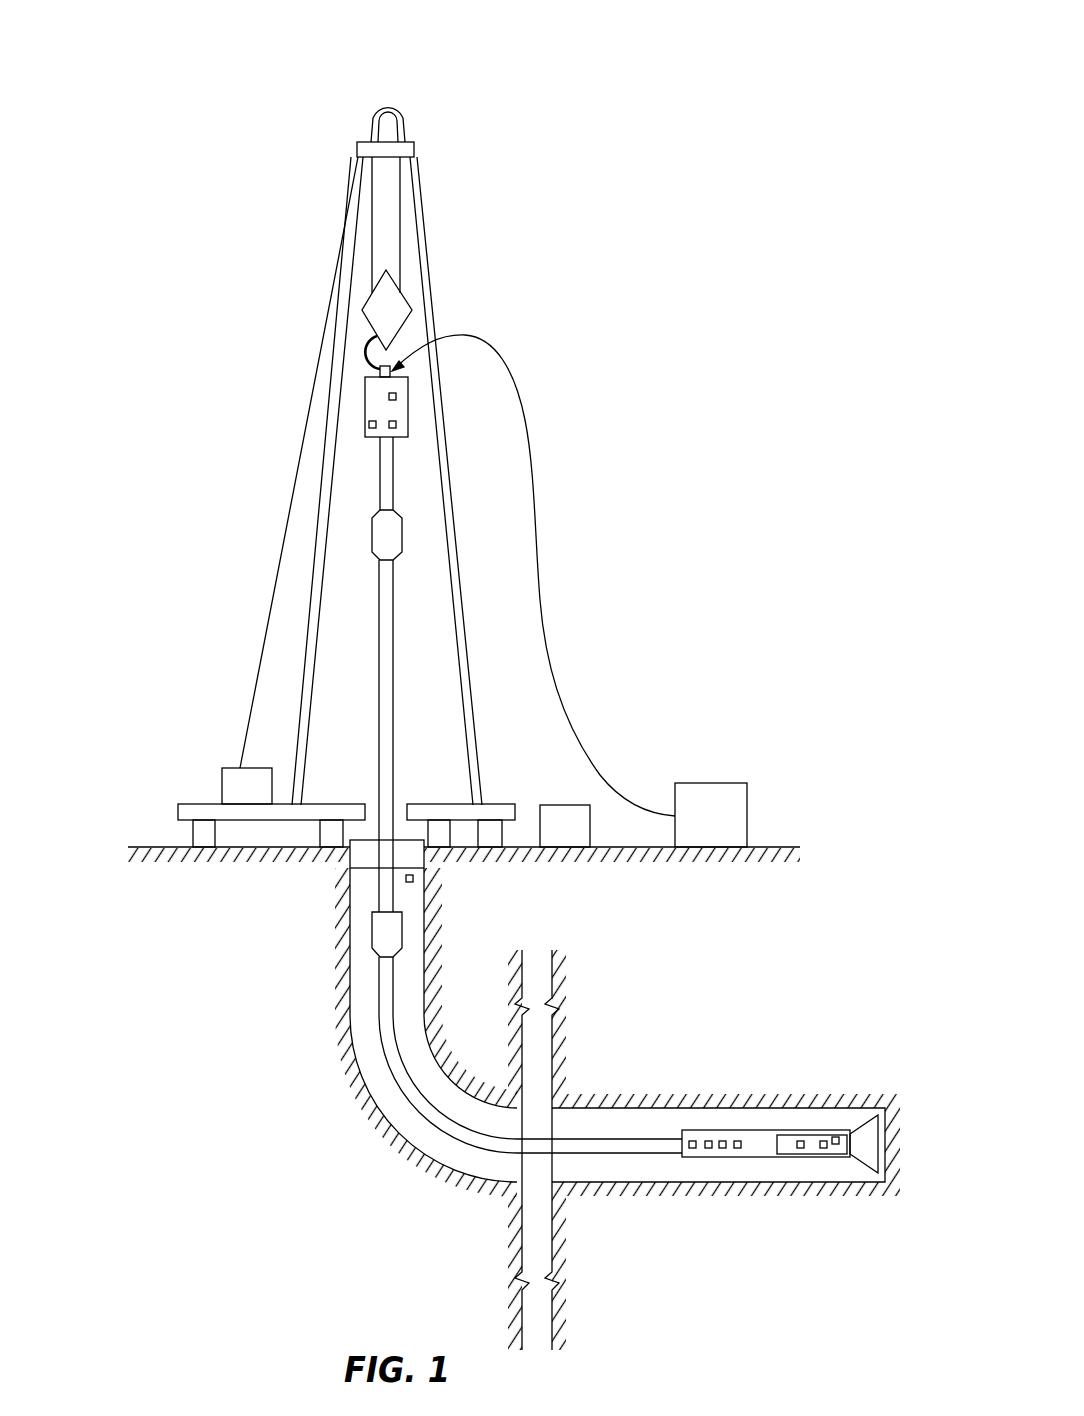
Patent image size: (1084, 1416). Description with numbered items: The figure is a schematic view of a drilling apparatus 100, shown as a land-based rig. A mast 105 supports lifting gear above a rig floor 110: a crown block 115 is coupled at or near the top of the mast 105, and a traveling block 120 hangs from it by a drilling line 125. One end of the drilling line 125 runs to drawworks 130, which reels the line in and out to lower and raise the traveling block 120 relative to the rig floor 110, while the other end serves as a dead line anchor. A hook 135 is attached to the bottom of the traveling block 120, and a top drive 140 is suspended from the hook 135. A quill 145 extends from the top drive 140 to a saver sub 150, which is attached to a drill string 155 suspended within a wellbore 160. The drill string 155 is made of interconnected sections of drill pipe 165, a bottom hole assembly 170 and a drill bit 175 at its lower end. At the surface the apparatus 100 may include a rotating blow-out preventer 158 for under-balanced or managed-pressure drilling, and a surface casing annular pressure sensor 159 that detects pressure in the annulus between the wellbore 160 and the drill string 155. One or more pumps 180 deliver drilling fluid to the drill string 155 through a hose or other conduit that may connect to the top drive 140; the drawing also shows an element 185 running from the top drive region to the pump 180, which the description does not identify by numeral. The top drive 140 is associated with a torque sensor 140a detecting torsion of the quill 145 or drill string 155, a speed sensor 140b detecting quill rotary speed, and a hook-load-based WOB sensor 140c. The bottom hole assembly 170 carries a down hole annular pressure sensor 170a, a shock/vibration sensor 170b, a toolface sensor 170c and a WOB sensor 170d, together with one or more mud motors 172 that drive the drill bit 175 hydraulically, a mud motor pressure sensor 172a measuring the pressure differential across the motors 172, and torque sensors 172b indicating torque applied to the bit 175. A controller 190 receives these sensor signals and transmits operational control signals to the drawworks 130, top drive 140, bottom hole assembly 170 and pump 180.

The drilling apparatus 100 is at (296, 76).
The mast 105 is at (418, 195).
The rig floor 110 is at (178, 812).
The crown block 115 is at (402, 110).
The traveling block 120 is at (412, 310).
The drilling line 125 is at (367, 190).
The drawworks 130 is at (222, 775).
The hook 135 is at (368, 350).
The top drive 140 is at (365, 406).
The torque sensor 140a is at (369, 426).
The speed sensor 140b is at (397, 396).
The WOB sensor 140c is at (397, 425).
The quill 145 is at (378, 473).
The saver sub 150 is at (372, 532).
The drill string 155 is at (355, 610).
The rotating blow-out preventer 158 is at (363, 858).
The surface casing annular pressure sensor 159 is at (413, 879).
The wellbore 160 is at (350, 1012).
The drill pipe 165 is at (378, 737).
The bottom hole assembly 170 is at (840, 1176).
The down hole annular pressure sensor 170a is at (692, 1148).
The shock/vibration sensor 170b is at (708, 1141).
The toolface sensor 170c is at (722, 1148).
The WOB sensor 170d is at (738, 1141).
The motor 172 is at (815, 1157).
The mud motor pressure sensor 172a is at (800, 1141).
The torque sensor 172b is at (824, 1141).
The drill bit 175 is at (864, 1115).
The pump 180 is at (710, 783).
The communication line 185 is at (575, 716).
The controller 190 is at (565, 805).